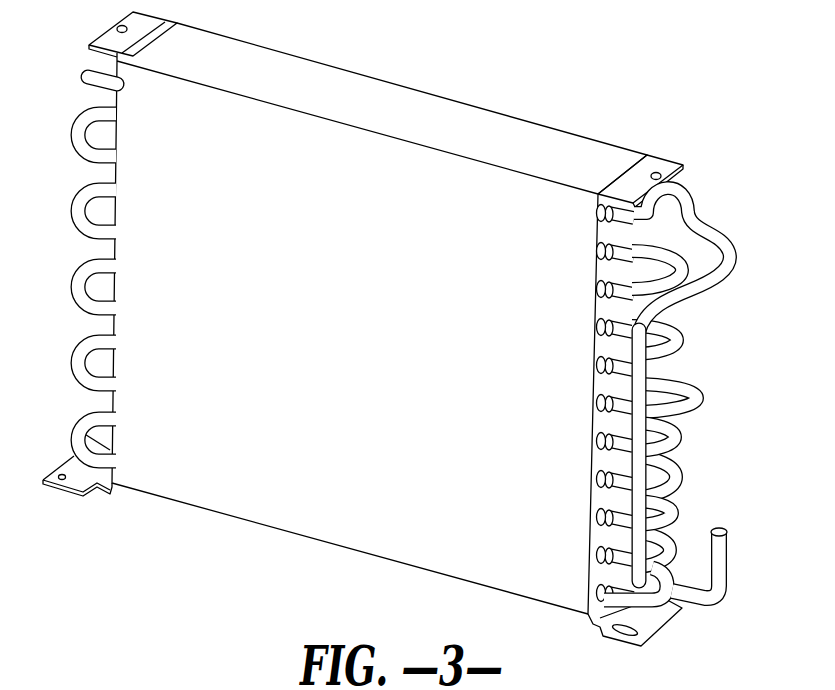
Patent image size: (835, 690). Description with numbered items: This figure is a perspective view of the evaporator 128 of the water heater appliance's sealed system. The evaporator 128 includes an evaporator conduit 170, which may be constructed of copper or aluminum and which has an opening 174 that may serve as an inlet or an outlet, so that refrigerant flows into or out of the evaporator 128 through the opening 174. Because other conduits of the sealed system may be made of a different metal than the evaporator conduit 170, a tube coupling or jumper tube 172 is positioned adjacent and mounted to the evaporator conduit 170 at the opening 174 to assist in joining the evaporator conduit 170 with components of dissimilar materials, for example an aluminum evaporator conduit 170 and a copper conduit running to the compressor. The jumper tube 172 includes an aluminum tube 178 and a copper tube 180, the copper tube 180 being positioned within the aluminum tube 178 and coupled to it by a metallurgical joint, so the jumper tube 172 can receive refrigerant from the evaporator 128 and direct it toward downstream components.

The evaporator 128 is at (403, 110).
The evaporator conduit 170 is at (73, 281).
The jumper tube 172 is at (670, 483).
The opening 174 is at (660, 364).
The aluminum tube 178 is at (668, 410).
The copper tube 180 is at (660, 517).